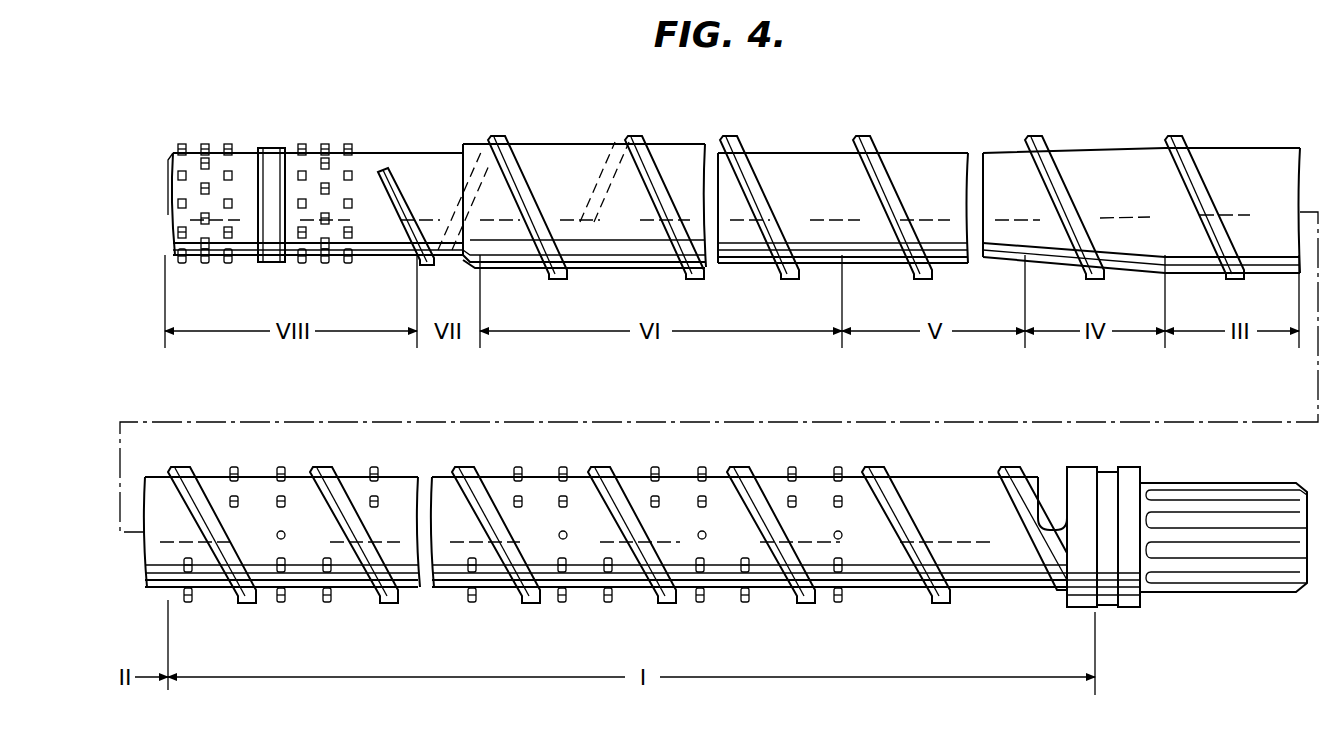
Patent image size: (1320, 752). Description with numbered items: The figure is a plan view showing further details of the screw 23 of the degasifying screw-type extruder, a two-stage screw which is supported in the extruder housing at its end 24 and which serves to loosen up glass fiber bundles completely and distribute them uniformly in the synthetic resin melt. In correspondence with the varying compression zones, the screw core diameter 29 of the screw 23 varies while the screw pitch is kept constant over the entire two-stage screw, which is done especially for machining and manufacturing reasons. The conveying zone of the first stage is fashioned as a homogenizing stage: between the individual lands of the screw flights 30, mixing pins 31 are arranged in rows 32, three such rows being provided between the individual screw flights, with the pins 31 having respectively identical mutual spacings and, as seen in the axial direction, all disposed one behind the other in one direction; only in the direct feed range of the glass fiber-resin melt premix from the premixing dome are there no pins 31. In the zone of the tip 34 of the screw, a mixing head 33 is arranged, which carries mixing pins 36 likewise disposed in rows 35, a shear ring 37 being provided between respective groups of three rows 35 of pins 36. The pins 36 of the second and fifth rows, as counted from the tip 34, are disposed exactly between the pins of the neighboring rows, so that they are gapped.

The screw 23 is at (814, 165).
The end 24 is at (1216, 570).
The screw core diameter 29 is at (945, 150).
The screw flights 30 is at (742, 170).
The mixing pins 31 is at (470, 604).
The rows 32 is at (607, 605).
The mixing head 33 is at (245, 150).
The tip 34 is at (166, 213).
The rows 35 is at (307, 147).
The mixing pins 36 is at (204, 143).
The shear ring 37 is at (274, 148).